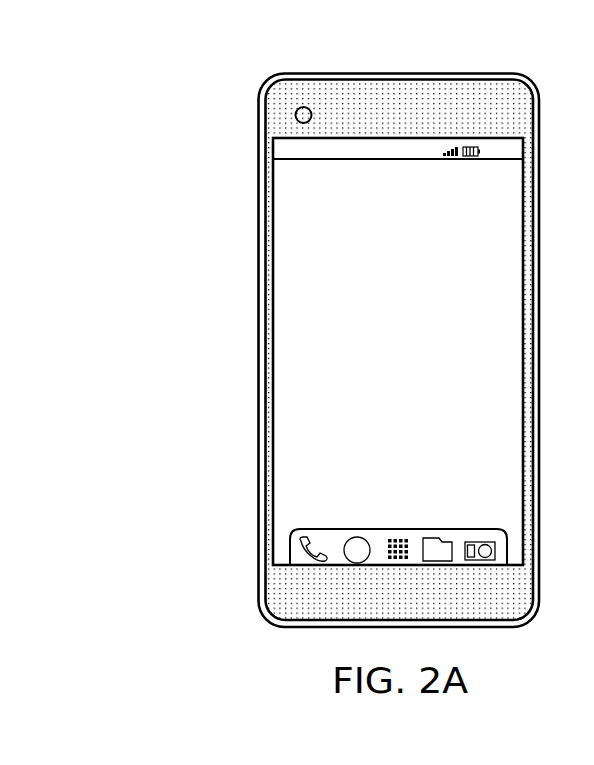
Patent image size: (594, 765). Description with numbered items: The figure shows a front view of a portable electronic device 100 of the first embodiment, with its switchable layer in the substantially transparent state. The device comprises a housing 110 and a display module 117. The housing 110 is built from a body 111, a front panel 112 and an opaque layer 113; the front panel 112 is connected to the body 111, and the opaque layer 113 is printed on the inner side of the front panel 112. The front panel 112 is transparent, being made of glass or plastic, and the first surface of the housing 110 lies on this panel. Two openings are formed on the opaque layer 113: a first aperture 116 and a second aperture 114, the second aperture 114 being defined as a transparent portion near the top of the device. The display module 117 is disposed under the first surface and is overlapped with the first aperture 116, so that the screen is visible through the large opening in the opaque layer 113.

The portable electronic device 100 is at (222, 73).
The housing 110 is at (182, 177).
The body 111 is at (258, 299).
The front panel 112 is at (290, 244).
The opaque layer 113 is at (350, 125).
The second aperture 114 is at (295, 117).
The first aperture 116 is at (270, 351).
The display module 117 is at (310, 404).